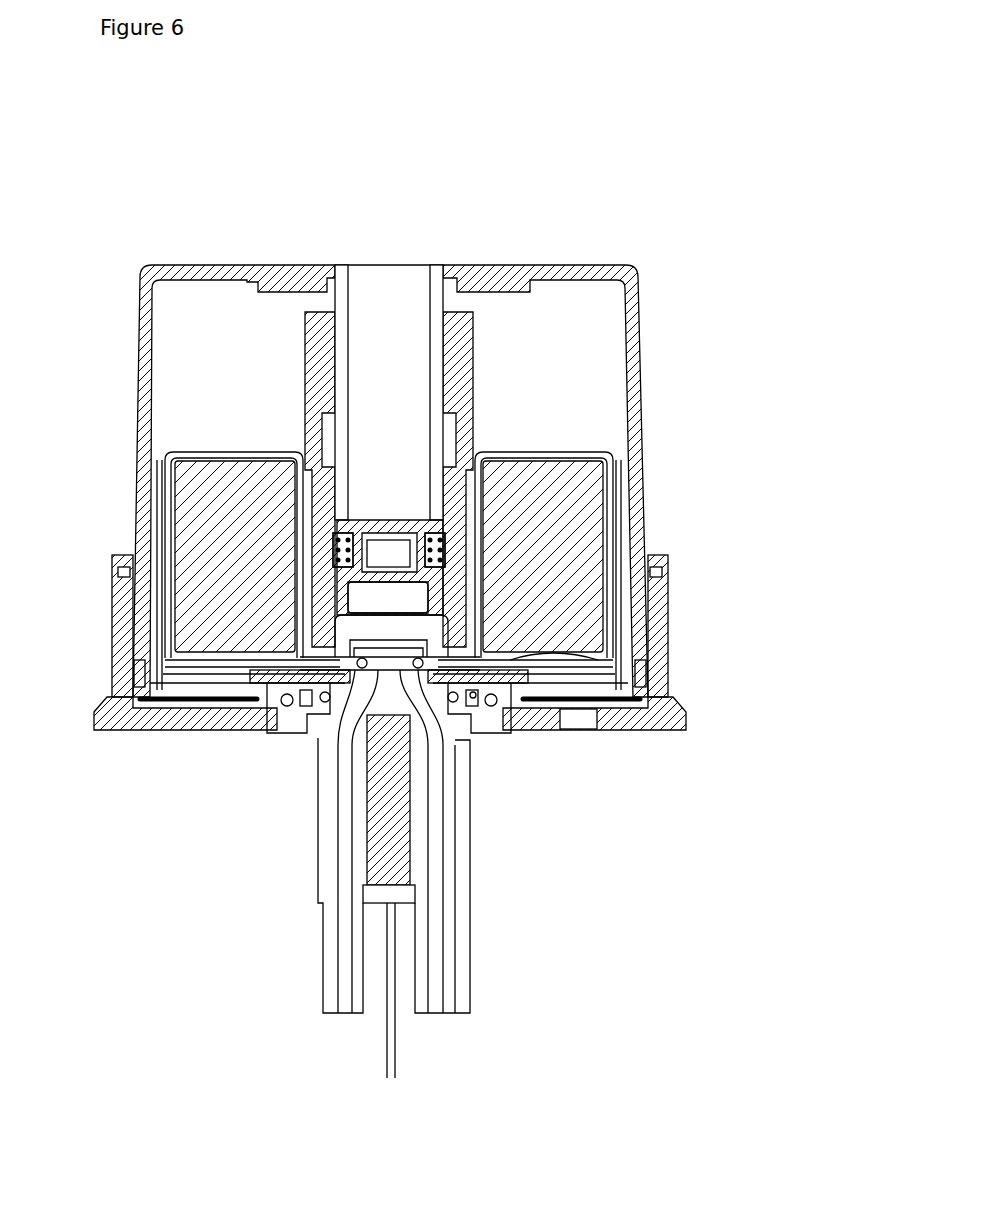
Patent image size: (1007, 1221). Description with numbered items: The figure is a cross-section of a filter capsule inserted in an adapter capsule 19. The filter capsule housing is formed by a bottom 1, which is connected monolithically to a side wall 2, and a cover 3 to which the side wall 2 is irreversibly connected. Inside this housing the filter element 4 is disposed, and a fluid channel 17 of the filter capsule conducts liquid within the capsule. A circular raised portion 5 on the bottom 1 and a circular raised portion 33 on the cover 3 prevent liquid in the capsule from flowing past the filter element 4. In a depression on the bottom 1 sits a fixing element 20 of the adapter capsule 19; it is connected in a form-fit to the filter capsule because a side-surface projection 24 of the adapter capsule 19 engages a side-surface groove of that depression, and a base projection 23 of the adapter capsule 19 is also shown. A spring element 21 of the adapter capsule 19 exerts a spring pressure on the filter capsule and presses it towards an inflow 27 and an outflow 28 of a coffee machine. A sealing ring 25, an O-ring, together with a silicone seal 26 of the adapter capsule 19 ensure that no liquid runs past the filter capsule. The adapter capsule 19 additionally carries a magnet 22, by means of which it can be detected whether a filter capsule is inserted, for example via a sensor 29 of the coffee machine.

The bottom of the housing 1 is at (235, 457).
The side wall of the housing 2 is at (163, 527).
The cover of the housing 3 is at (145, 645).
The filter element 4 is at (205, 496).
The circular raised portion on the bottom of the housing 5 is at (265, 460).
The fluid channel of the filter capsule 17 is at (172, 596).
The adapter capsule 19 is at (637, 309).
The fixing element of the adapter capsule 20 is at (478, 377).
The spring element of the adapter capsule 21 is at (385, 552).
The magnet of the adapter capsule 22 is at (336, 563).
The base projection of the adapter capsule 23 is at (507, 687).
The side-surface projection of the adapter capsule 24 is at (470, 595).
The sealing ring of the adapter capsule 25 is at (438, 690).
The silicone seal 26 is at (473, 695).
The inflow of the coffee machine 27 is at (336, 856).
The outflow of the coffee machine 28 is at (393, 872).
The sensor of the coffee machine 29 is at (448, 898).
The circular raised portion on the cover 33 is at (460, 627).